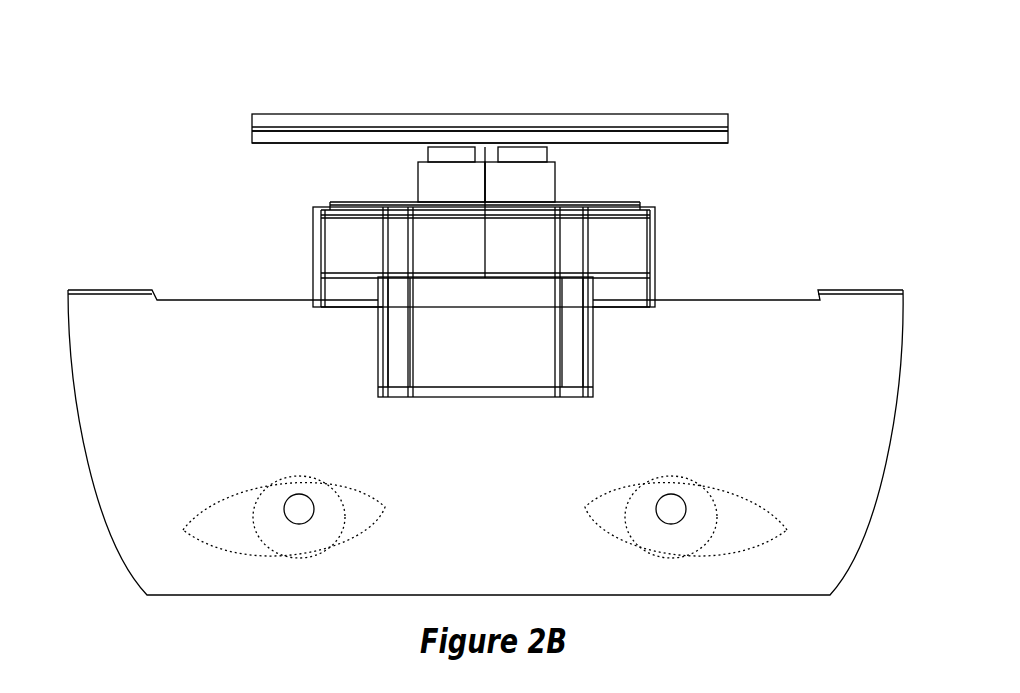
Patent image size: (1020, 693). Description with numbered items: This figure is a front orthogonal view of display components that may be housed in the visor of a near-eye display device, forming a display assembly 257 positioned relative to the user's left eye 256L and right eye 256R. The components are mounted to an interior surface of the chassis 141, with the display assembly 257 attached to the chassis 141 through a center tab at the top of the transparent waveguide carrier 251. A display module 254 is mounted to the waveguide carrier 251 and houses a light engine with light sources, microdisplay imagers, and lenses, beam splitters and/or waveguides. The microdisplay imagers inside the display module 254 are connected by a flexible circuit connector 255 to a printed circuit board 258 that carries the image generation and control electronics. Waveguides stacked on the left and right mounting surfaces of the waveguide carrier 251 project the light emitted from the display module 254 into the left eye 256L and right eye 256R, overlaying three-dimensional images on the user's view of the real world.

The chassis 141 is at (687, 114).
The printed circuit board 258 is at (282, 143).
The flexible circuit connector 255 is at (417, 198).
The display module 254 is at (655, 247).
The display assembly 257 is at (585, 272).
The right eye 256R is at (355, 500).
The left eye 256L is at (715, 497).
The transparent waveguide carrier 251 is at (866, 542).